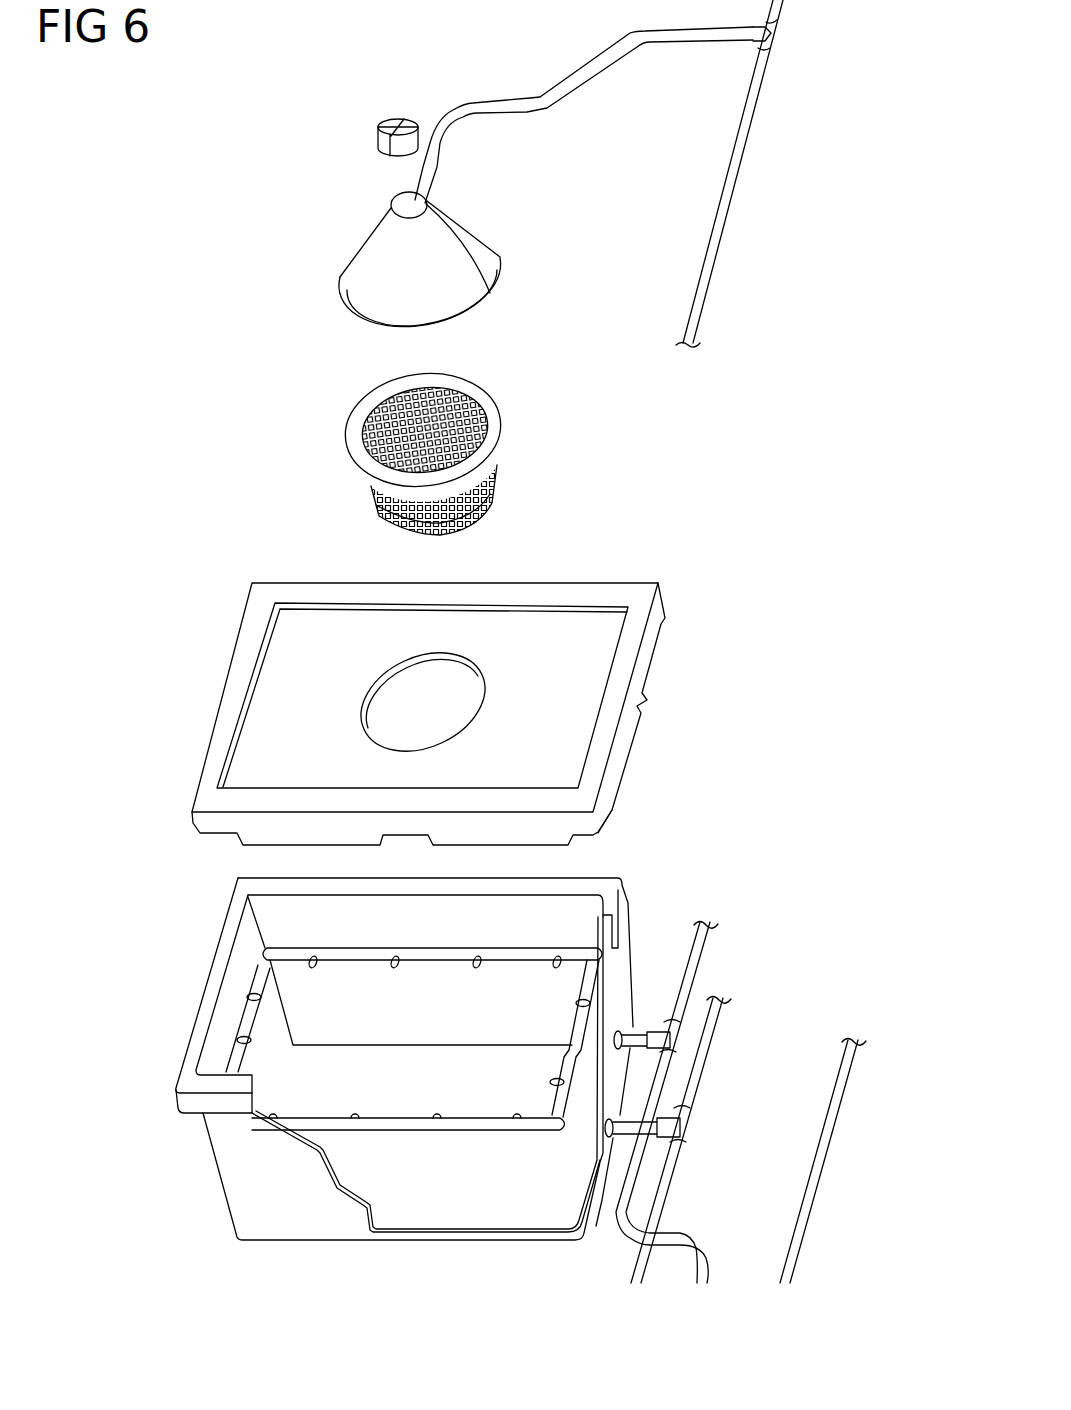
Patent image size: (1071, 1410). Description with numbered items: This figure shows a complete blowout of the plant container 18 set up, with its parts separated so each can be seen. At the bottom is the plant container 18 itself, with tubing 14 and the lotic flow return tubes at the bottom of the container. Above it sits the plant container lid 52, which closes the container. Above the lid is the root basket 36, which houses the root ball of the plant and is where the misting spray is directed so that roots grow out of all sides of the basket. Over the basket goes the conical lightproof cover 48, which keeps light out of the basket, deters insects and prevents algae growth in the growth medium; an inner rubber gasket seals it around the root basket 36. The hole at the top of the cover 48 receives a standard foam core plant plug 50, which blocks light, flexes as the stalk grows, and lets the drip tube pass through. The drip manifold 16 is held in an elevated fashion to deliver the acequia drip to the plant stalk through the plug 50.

The tubing 14 is at (540, 953).
The drip manifold 16 is at (730, 180).
The plant container 18 is at (258, 1182).
The root basket 36 is at (365, 432).
The lightproof cover 48 is at (385, 275).
The foam core plant plug 50 is at (377, 148).
The plant container lid 52 is at (550, 705).